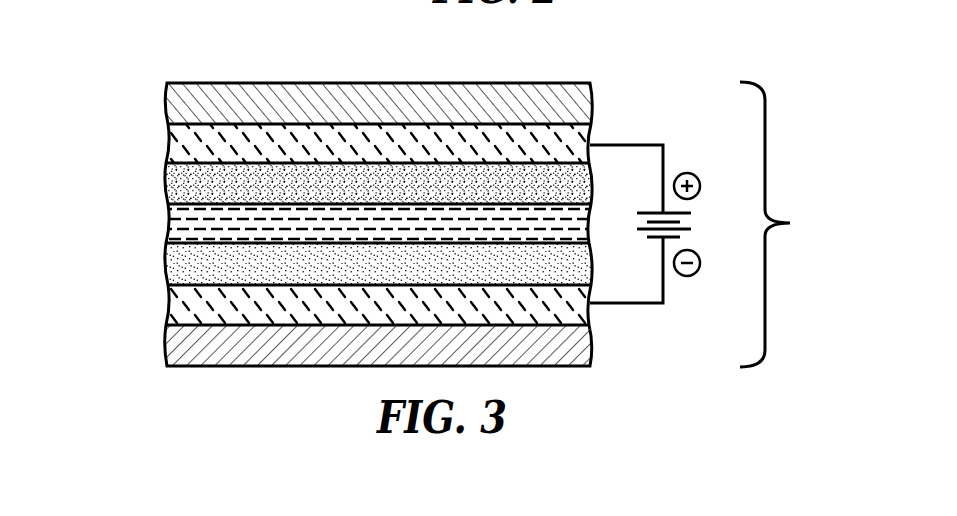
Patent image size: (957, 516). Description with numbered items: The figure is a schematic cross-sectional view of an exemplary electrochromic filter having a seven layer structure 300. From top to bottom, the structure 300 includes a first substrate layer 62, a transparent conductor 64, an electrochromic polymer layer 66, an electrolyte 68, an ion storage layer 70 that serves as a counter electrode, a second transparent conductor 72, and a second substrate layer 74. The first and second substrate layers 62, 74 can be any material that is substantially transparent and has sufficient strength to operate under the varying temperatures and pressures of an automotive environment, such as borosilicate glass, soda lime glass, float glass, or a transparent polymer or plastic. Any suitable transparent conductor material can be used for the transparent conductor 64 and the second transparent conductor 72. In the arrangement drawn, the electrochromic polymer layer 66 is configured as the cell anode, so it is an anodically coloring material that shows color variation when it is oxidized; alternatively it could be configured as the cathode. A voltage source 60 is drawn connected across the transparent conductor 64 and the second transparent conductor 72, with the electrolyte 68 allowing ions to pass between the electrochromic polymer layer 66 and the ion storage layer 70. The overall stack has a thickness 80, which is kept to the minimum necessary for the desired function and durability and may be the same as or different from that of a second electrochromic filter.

The seven layer structure 300 is at (128, 68).
The first substrate layer 62 is at (168, 113).
The transparent conductor 64 is at (168, 150).
The electrochromic polymer layer 66 is at (168, 188).
The electrolyte 68 is at (168, 228).
The ion storage layer 70 is at (168, 267).
The second transparent conductor 72 is at (168, 305).
The second substrate layer 74 is at (168, 343).
The voltage source / battery 60 is at (693, 221).
The thickness 80 is at (790, 223).